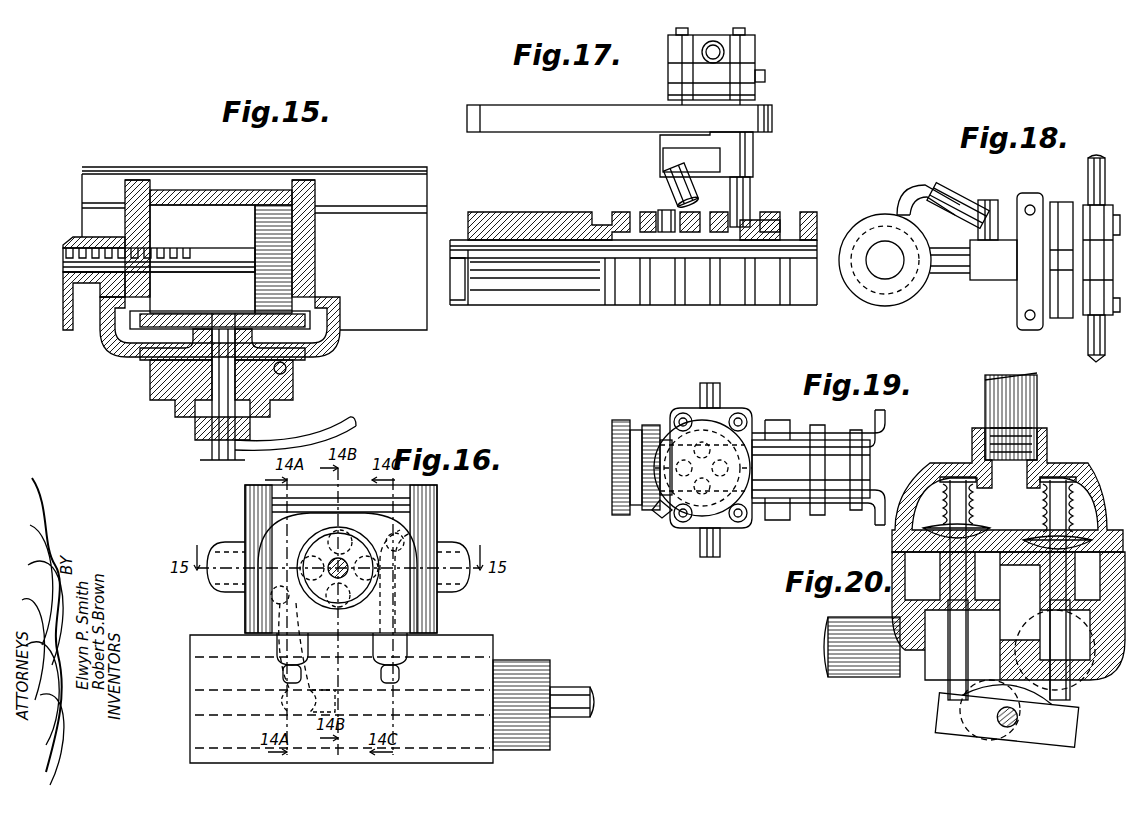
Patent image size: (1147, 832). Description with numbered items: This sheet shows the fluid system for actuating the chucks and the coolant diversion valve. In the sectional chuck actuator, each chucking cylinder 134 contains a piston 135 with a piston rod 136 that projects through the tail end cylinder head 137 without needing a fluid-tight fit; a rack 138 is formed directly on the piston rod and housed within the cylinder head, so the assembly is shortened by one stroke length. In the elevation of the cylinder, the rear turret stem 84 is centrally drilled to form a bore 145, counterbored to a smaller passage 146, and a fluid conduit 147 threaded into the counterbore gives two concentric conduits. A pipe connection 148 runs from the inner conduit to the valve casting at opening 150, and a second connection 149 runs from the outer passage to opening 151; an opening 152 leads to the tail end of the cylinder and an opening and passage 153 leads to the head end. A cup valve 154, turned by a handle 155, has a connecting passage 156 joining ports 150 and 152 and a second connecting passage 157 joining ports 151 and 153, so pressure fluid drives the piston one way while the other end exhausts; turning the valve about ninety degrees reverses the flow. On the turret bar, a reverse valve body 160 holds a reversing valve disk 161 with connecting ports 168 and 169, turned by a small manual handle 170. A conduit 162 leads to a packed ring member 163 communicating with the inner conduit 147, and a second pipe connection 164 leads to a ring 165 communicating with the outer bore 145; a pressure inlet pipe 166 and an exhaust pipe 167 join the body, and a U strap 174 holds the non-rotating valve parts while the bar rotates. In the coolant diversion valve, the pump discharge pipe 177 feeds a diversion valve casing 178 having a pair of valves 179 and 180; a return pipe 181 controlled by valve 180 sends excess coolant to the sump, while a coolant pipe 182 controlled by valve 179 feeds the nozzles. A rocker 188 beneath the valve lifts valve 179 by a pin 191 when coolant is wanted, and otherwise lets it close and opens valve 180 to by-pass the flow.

In FIG. 17, the rear turret stem 84 is at (538, 204).
In FIG. 16, the rear turret stem 84 is at (530, 652).
In FIG. 15, the chucking cylinder 134 is at (210, 192).
In FIG. 16, the chucking cylinder 134 is at (255, 512).
In FIG. 15, the piston 135 is at (278, 240).
In FIG. 15, the piston rod 136 is at (215, 270).
In FIG. 15, the tail end cylinder head 137 is at (125, 228).
In FIG. 15, the rack 138 is at (155, 250).
In FIG. 16, the bore 145 is at (548, 668).
In FIG. 16, the passage 146 is at (282, 710).
In FIG. 17, the fluid conduit 147 is at (458, 270).
In FIG. 16, the fluid conduit 147 is at (580, 698).
In FIG. 16, the pipe connection 148 is at (283, 676).
In FIG. 16, the second connection 149 is at (399, 674).
In FIG. 16, the opening 150 is at (336, 604).
In FIG. 16, the opening 151 is at (360, 515).
In FIG. 15, the opening 152 is at (180, 360).
In FIG. 16, the opening 152 is at (300, 560).
In FIG. 15, the opening and passage 153 is at (300, 362).
In FIG. 16, the opening and passage 153 is at (420, 517).
In FIG. 15, the cup valve 154 is at (200, 400).
In FIG. 15, the handle 155 is at (300, 442).
In FIG. 15, the connecting passage 156 is at (165, 385).
In FIG. 16, the connecting passage 156 is at (268, 610).
In FIG. 15, the second connecting passage 157 is at (268, 385).
In FIG. 16, the second connecting passage 157 is at (432, 497).
In FIG. 17, the reverse valve body 160 is at (756, 148).
In FIG. 18, the reverse valve body 160 is at (990, 281).
In FIG. 17, the reversing valve disk 161 is at (720, 72).
In FIG. 18, the reversing valve disk 161 is at (1085, 220).
In FIG. 17, the conduit 162 is at (752, 190).
In FIG. 18, the conduit 162 is at (950, 270).
In FIG. 19, the conduit 162 is at (612, 468).
In FIG. 17, the ring member 163 is at (772, 222).
In FIG. 17, the second pipe connection 164 is at (670, 183).
In FIG. 18, the second pipe connection 164 is at (945, 198).
In FIG. 19, the second pipe connection 164 is at (770, 428).
In FIG. 17, the ring 165 is at (658, 215).
In FIG. 17, the pressure inlet pipe 166 is at (716, 42).
In FIG. 18, the pressure inlet pipe 166 is at (1090, 165).
In FIG. 19, the pressure inlet pipe 166 is at (712, 392).
In FIG. 18, the exhaust pipe 167 is at (1090, 345).
In FIG. 19, the exhaust pipe 167 is at (720, 546).
In FIG. 19, the connecting port 168 is at (745, 500).
In FIG. 19, the connecting port 169 is at (675, 420).
In FIG. 17, the manual handle 170 is at (766, 76).
In FIG. 18, the manual handle 170 is at (1058, 310).
In FIG. 19, the manual handle 170 is at (660, 515).
In FIG. 17, the U strap 174 is at (568, 110).
In FIG. 18, the U strap 174 is at (1017, 300).
In FIG. 19, the U strap 174 is at (830, 432).
In FIG. 20, the pump discharge pipe 177 is at (1037, 392).
In FIG. 20, the diversion valve casing 178 is at (1025, 465).
In FIG. 20, the valve 179 is at (940, 520).
In FIG. 20, the valve 180 is at (1090, 540).
In FIG. 20, the return pipe 181 is at (1080, 678).
In FIG. 20, the coolant pipe 182 is at (840, 678).
In FIG. 20, the rocker 188 is at (972, 730).
In FIG. 20, the pin 191 is at (950, 690).